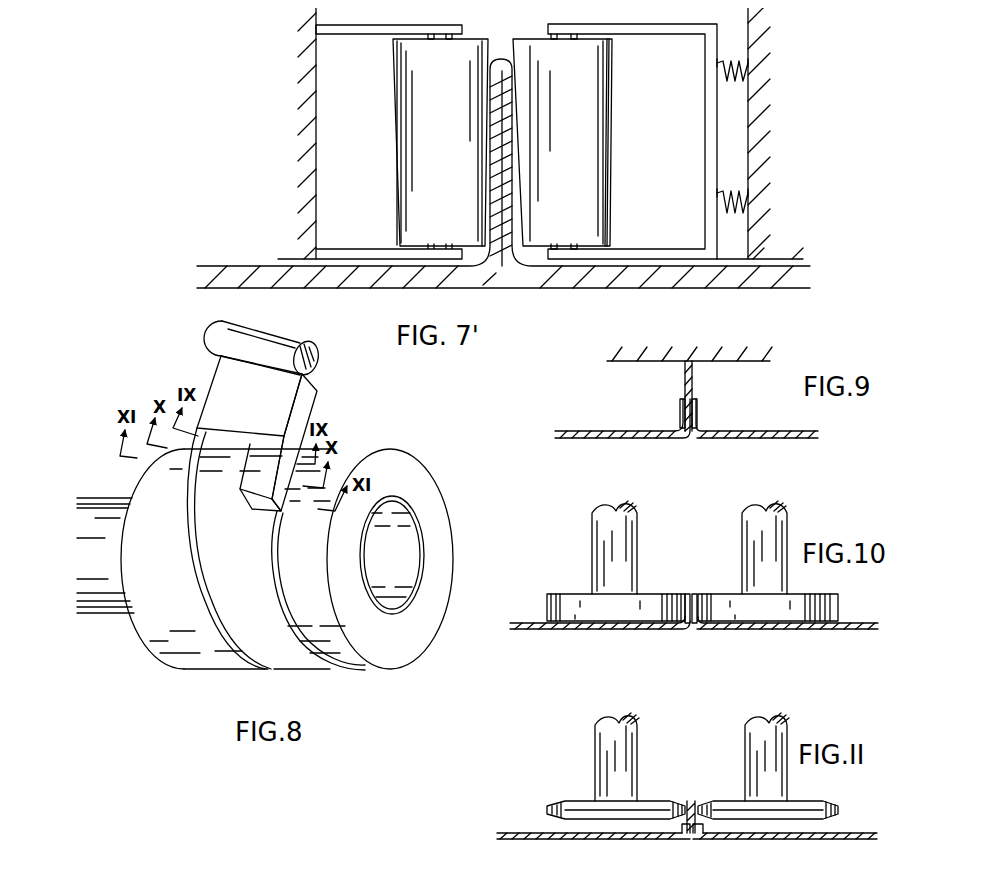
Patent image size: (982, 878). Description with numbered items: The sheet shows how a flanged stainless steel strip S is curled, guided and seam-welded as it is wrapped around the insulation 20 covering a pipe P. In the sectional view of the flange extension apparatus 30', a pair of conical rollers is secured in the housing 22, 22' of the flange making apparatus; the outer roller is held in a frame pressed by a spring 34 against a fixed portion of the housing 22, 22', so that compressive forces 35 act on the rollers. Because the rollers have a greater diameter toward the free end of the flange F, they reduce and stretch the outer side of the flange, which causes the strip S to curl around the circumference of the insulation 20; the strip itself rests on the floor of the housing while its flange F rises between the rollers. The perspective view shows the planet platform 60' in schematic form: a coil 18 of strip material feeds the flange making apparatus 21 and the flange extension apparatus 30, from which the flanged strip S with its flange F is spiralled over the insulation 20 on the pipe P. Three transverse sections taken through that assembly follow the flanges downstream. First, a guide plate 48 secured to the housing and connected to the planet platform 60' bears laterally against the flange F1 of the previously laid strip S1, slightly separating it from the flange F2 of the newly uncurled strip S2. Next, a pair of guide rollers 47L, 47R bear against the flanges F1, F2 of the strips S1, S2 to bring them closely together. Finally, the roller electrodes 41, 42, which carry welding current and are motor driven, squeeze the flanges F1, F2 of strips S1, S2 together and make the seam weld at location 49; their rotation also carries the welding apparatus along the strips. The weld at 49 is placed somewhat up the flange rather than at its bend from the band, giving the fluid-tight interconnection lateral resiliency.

In FIG. 7', the housing 22 is at (276, 133).
In FIG. 7', the housing 22' is at (781, 133).
In FIG. 7', the compressive forces 35 is at (391, 147).
In FIG. 7', the spring pressure 34 is at (735, 97).
In FIG. 7', the stainless steel strip S is at (368, 287).
In FIG. 8, the stainless steel strip S is at (293, 668).
In FIG. 7', the flange extension apparatus 30' is at (524, 197).
In FIG. 8, the insulation material 20 is at (180, 648).
In FIG. 8, the pipe P is at (101, 572).
In FIG. 8, the flange F is at (362, 672).
In FIG. 8, the flange making apparatus 21 is at (249, 420).
In FIG. 8, the flange extension apparatus 30 is at (263, 469).
In FIG. 8, the coil of strip material 18 is at (318, 368).
In FIG. 8, the planet platform 60' is at (192, 367).
In FIG. 9, the planet platform 60' is at (716, 343).
In FIG. 9, the guide plate 48 is at (693, 380).
In FIG. 9, the flange F1 is at (697, 420).
In FIG. 10, the flange F1 is at (695, 590).
In FIG. 11, the flange F1 is at (703, 827).
In FIG. 9, the flange F2 is at (681, 413).
In FIG. 10, the flange F2 is at (690, 590).
In FIG. 11, the flange F2 is at (683, 824).
In FIG. 9, the previously laid strip S1 is at (777, 428).
In FIG. 10, the previously laid strip S1 is at (765, 632).
In FIG. 11, the previously laid strip S1 is at (827, 840).
In FIG. 9, the newly uncurled strip S2 is at (602, 430).
In FIG. 10, the newly uncurled strip S2 is at (605, 632).
In FIG. 11, the newly uncurled strip S2 is at (560, 840).
In FIG. 10, the guide roller 47L is at (547, 607).
In FIG. 10, the guide roller 47R is at (838, 608).
In FIG. 11, the roller electrode 42 is at (557, 803).
In FIG. 11, the roller electrode 41 is at (838, 810).
In FIG. 11, the seam weld location 49 is at (690, 800).